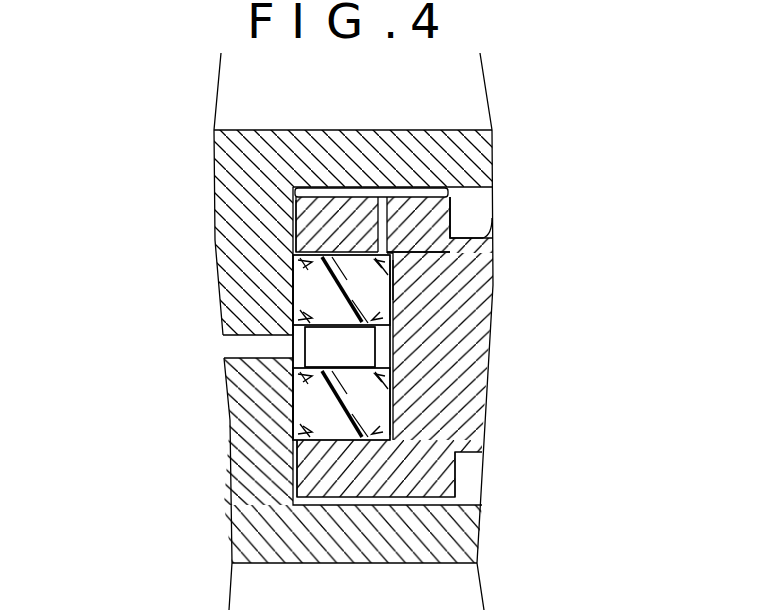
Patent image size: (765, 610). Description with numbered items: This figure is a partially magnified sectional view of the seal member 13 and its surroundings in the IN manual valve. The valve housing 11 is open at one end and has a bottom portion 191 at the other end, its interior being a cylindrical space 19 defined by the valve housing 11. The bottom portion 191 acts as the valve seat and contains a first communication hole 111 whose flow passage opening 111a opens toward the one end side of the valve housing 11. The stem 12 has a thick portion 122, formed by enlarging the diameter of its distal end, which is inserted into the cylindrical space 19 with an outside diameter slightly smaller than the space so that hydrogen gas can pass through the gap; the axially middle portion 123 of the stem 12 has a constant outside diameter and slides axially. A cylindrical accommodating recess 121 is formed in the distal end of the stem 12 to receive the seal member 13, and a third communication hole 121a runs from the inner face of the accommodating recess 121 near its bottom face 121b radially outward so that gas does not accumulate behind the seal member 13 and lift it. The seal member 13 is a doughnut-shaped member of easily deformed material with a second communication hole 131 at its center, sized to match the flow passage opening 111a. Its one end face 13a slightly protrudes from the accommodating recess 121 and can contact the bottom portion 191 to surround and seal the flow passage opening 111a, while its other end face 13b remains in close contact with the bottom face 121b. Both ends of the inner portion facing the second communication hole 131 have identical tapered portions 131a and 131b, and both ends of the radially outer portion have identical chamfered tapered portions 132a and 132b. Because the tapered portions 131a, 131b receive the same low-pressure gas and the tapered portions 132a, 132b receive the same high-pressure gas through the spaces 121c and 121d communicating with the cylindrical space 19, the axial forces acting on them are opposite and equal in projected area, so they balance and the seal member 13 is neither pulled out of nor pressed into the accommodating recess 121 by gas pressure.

The valve housing 11 is at (264, 186).
The first communication hole 111 is at (253, 343).
The flow passage opening 111a is at (290, 325).
The stem 12 is at (459, 362).
The accommodating recess 121 is at (316, 243).
The third communication hole 121a is at (450, 213).
The bottom face 121b is at (395, 282).
The space 121c is at (445, 257).
The space 121d is at (295, 253).
The thick portion 122 is at (381, 190).
The axially middle portion 123 is at (493, 224).
The seal member 13 is at (293, 283).
The one end face 13a is at (293, 420).
The other end face 13b is at (392, 398).
The second communication hole 131 is at (330, 348).
The tapered portion 131a is at (295, 320).
The tapered portion 131b is at (393, 320).
The tapered portion 132a is at (295, 262).
The tapered portion 132b is at (390, 435).
The cylindrical space 19 is at (473, 202).
The bottom portion 191 is at (297, 412).